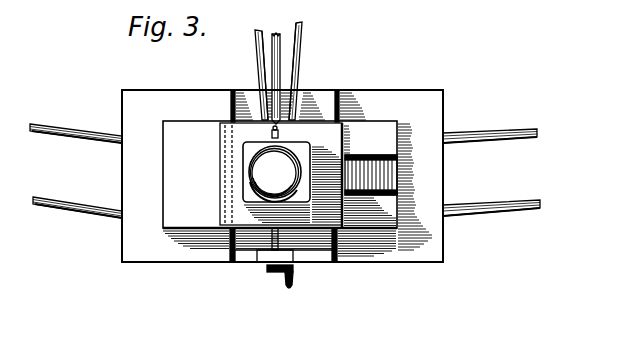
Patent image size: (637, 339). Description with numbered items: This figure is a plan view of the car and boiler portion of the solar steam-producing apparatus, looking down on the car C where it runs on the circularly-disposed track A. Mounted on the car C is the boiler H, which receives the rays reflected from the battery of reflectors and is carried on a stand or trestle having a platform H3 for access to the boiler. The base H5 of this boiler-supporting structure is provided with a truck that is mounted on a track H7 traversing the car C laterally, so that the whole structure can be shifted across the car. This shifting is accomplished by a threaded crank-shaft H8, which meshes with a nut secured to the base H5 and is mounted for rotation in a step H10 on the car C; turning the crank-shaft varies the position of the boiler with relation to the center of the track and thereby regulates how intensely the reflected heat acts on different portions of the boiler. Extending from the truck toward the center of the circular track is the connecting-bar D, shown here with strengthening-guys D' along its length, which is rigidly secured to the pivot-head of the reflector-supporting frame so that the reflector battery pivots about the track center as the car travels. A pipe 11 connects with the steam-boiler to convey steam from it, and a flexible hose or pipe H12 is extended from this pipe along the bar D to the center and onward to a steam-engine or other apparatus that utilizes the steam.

The circularly-disposed track A is at (500, 143).
The car C is at (282, 176).
The connecting-bar D is at (312, 71).
The strengthening-guys D' is at (272, 65).
The boiler H is at (275, 174).
The platform H3 is at (255, 148).
The base H5 is at (288, 163).
The track H7 is at (380, 104).
The threaded crank-shaft H8 is at (280, 273).
The step H10 is at (272, 262).
The flexible hose or pipe H12 is at (281, 66).
The pipe 11 is at (281, 135).